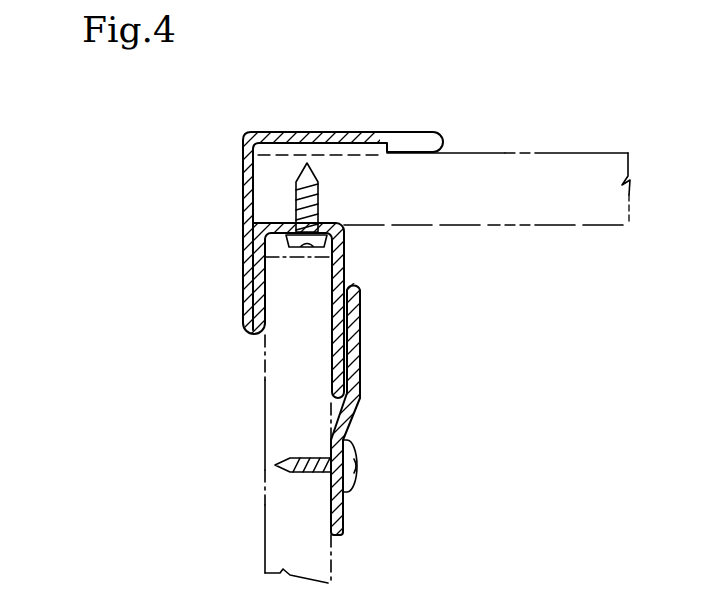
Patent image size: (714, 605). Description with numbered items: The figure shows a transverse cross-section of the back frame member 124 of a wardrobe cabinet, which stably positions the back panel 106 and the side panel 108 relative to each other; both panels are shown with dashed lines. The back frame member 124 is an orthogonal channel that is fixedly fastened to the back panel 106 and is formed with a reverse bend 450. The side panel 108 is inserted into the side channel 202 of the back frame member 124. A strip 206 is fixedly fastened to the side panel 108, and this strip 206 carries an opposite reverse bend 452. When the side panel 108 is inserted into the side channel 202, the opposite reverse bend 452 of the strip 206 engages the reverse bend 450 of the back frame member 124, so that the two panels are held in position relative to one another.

The back frame member 124 is at (336, 119).
The back panel 106 is at (497, 160).
The side panel 108 is at (270, 416).
The side channel 202 is at (248, 303).
The opposite reverse bend 452 is at (363, 297).
The reverse bend 450 is at (343, 383).
The strip 206 is at (343, 522).